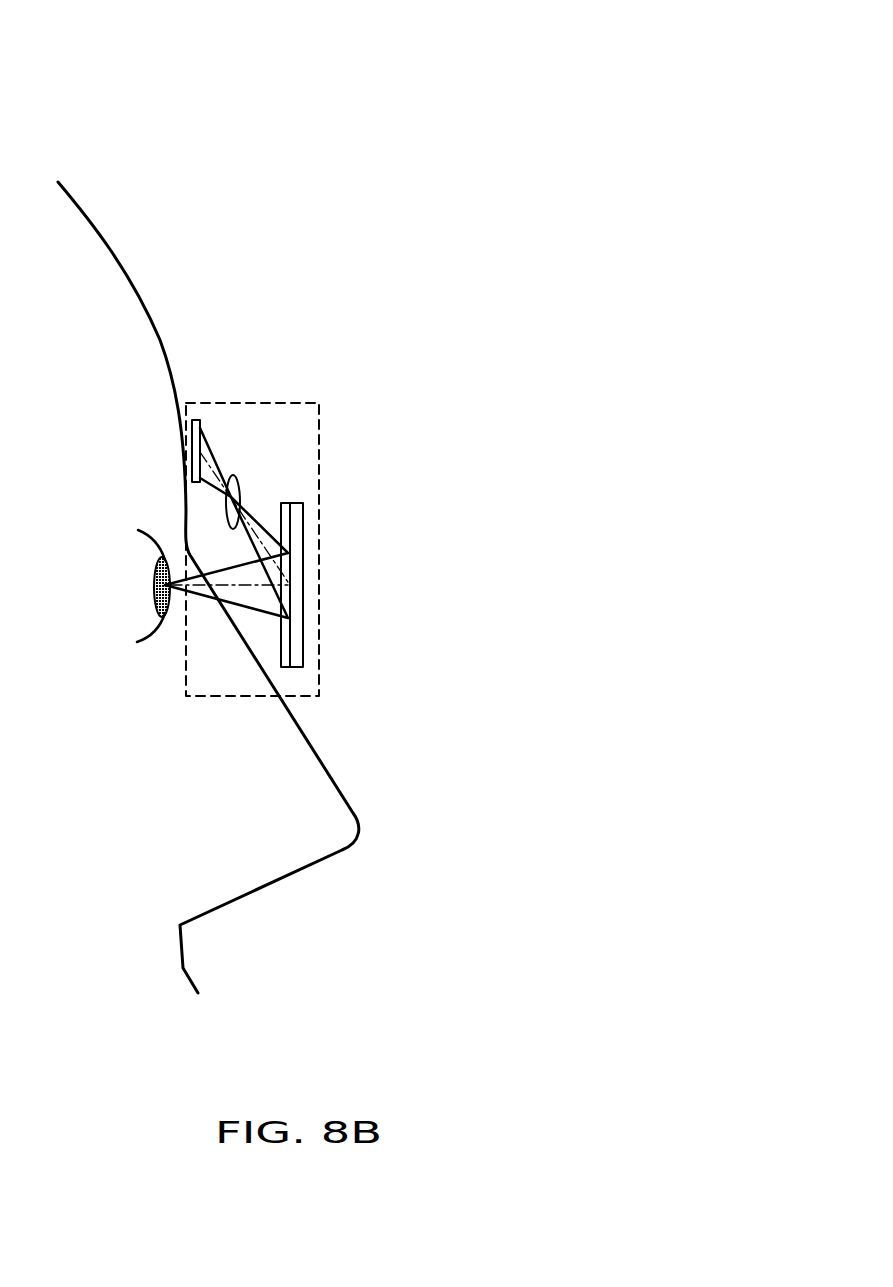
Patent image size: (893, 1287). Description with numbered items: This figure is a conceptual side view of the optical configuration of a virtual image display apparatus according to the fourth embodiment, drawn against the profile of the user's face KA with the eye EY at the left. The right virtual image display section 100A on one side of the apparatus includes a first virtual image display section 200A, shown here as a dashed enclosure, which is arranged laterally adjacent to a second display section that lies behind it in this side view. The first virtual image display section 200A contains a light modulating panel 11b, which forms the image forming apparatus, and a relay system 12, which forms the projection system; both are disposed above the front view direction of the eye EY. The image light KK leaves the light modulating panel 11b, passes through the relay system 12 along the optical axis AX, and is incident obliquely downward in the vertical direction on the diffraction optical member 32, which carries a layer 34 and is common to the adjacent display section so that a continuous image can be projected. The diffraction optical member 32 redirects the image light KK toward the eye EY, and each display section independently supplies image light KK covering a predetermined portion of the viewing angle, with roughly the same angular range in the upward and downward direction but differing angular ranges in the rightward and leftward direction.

The face of user KA is at (102, 228).
The eye EY is at (157, 540).
The right virtual image display section 100A is at (396, 320).
The first virtual image display section 200A is at (246, 366).
The light modulating panel 11b is at (197, 419).
The relay system 12 is at (240, 478).
The optical axis AX is at (290, 514).
The diffraction optical member 32 is at (305, 573).
The half mirror layer 34 is at (290, 602).
The image light KK is at (258, 605).